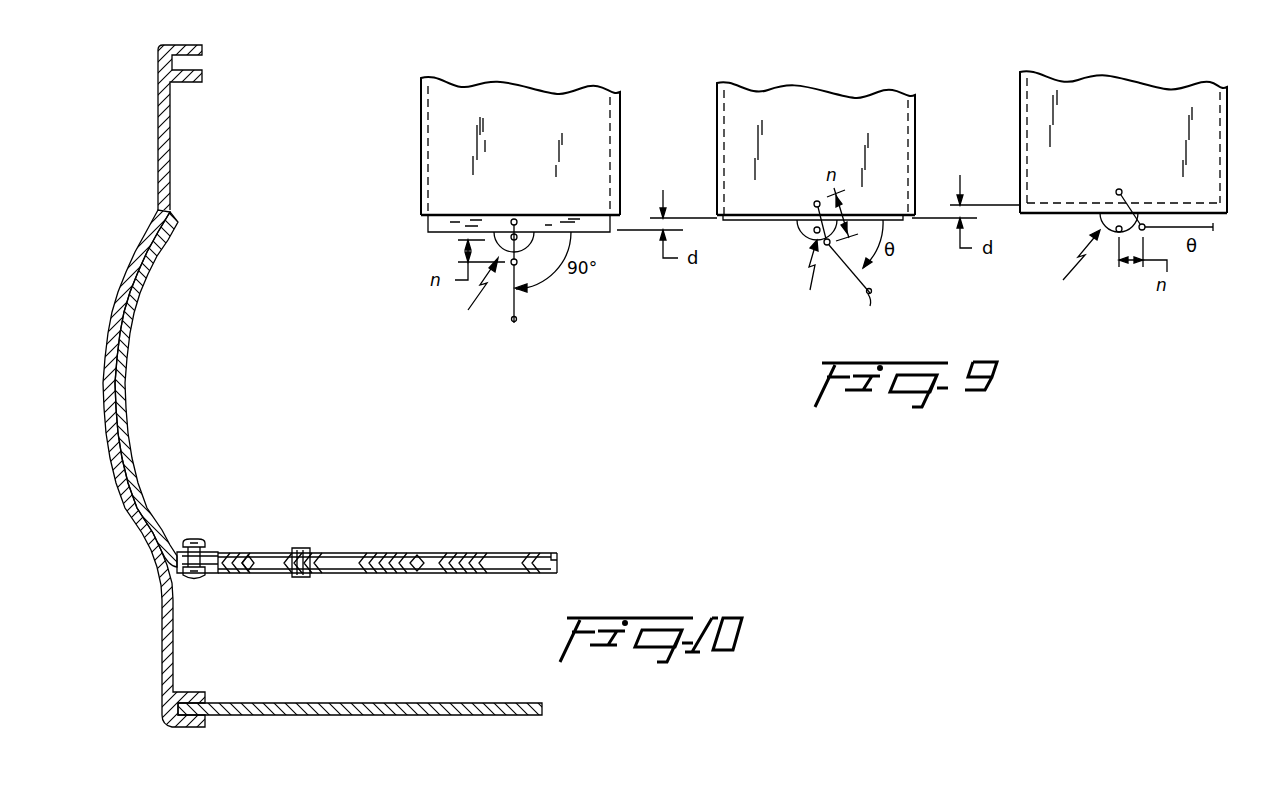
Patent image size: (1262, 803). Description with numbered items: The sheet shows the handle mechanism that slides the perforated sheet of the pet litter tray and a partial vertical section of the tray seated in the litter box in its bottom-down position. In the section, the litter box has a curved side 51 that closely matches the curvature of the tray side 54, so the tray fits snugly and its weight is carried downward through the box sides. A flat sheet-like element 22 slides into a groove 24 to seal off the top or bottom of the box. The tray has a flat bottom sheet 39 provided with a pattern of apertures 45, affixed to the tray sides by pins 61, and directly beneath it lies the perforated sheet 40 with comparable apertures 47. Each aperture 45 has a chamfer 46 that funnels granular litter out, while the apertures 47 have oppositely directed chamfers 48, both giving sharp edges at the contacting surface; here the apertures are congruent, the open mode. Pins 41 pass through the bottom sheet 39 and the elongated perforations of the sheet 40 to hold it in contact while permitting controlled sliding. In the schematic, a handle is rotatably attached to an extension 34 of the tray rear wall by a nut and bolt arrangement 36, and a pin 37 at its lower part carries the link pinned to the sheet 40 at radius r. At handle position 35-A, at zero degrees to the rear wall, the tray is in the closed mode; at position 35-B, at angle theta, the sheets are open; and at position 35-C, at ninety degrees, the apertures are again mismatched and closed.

In FIG. 10, the flat sheet-like element 22 is at (435, 716).
In FIG. 10, the groove 24 is at (192, 60).
In FIG. 9, the extension of the rear wall 34 is at (772, 283).
In FIG. 9, the handle position 35-A is at (1213, 230).
In FIG. 9, the handle position 35-B is at (867, 291).
In FIG. 9, the handle position 35-C is at (516, 318).
In FIG. 9, the nut and bolt arrangement 36 is at (812, 233).
In FIG. 9, the pin 37 is at (512, 266).
In FIG. 9, the bottom sheet 39 is at (421, 131).
In FIG. 9, the perforated sheet 40 is at (440, 232).
In FIG. 10, the pins 41 is at (303, 548).
In FIG. 10, the apertures 45 is at (428, 552).
In FIG. 10, the chamfer 46 is at (249, 552).
In FIG. 10, the apertures 47 is at (420, 574).
In FIG. 10, the chamfers 48 is at (248, 574).
In FIG. 10, the curved side 51 is at (120, 293).
In FIG. 10, the tray side 54 is at (123, 380).
In FIG. 10, the pins 61 is at (193, 538).